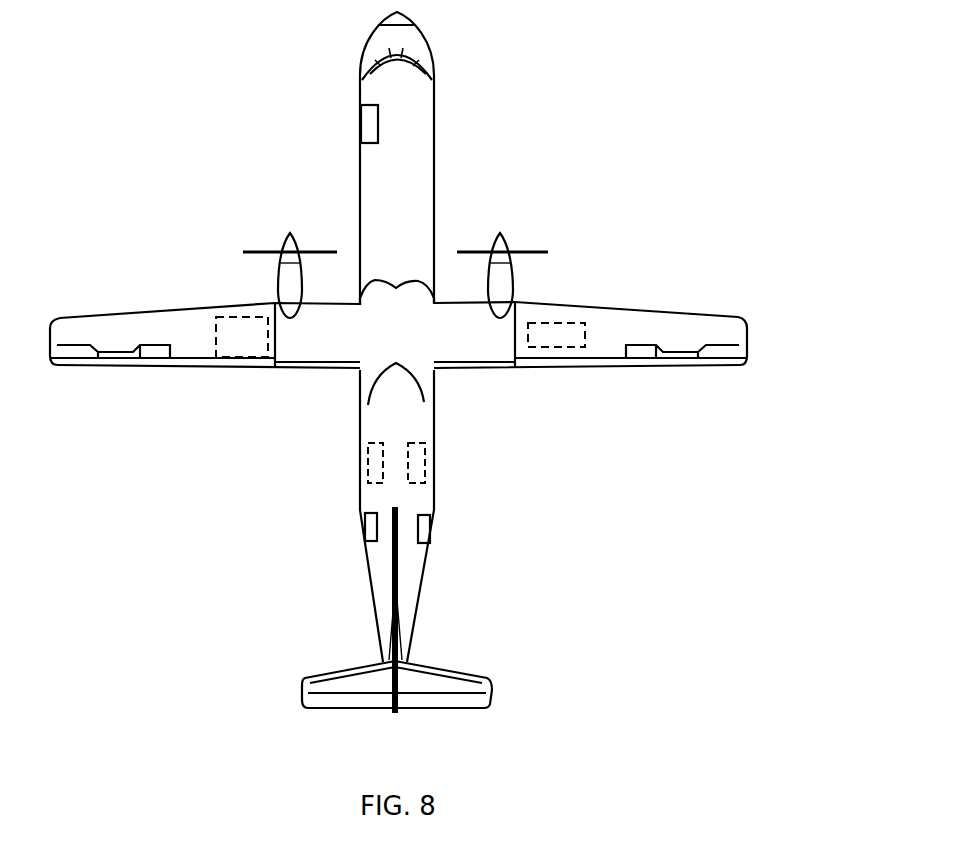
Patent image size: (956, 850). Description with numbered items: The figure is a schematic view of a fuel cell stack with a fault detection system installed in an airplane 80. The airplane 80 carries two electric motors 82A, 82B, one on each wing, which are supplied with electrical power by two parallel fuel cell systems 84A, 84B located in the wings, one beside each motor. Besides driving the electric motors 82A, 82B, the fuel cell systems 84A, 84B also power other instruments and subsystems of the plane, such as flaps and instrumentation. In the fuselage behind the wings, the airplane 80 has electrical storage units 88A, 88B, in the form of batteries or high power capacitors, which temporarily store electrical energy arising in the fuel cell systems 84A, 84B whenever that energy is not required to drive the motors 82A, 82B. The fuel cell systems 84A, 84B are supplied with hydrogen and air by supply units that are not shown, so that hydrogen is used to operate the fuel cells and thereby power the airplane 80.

The airplane 80 is at (435, 130).
The electric motor 82A is at (292, 283).
The electric motor 82B is at (503, 288).
The fuel cell system 84A is at (245, 378).
The fuel cell system 84B is at (562, 333).
The electrical storage unit 88A is at (370, 465).
The electrical storage unit 88B is at (415, 458).